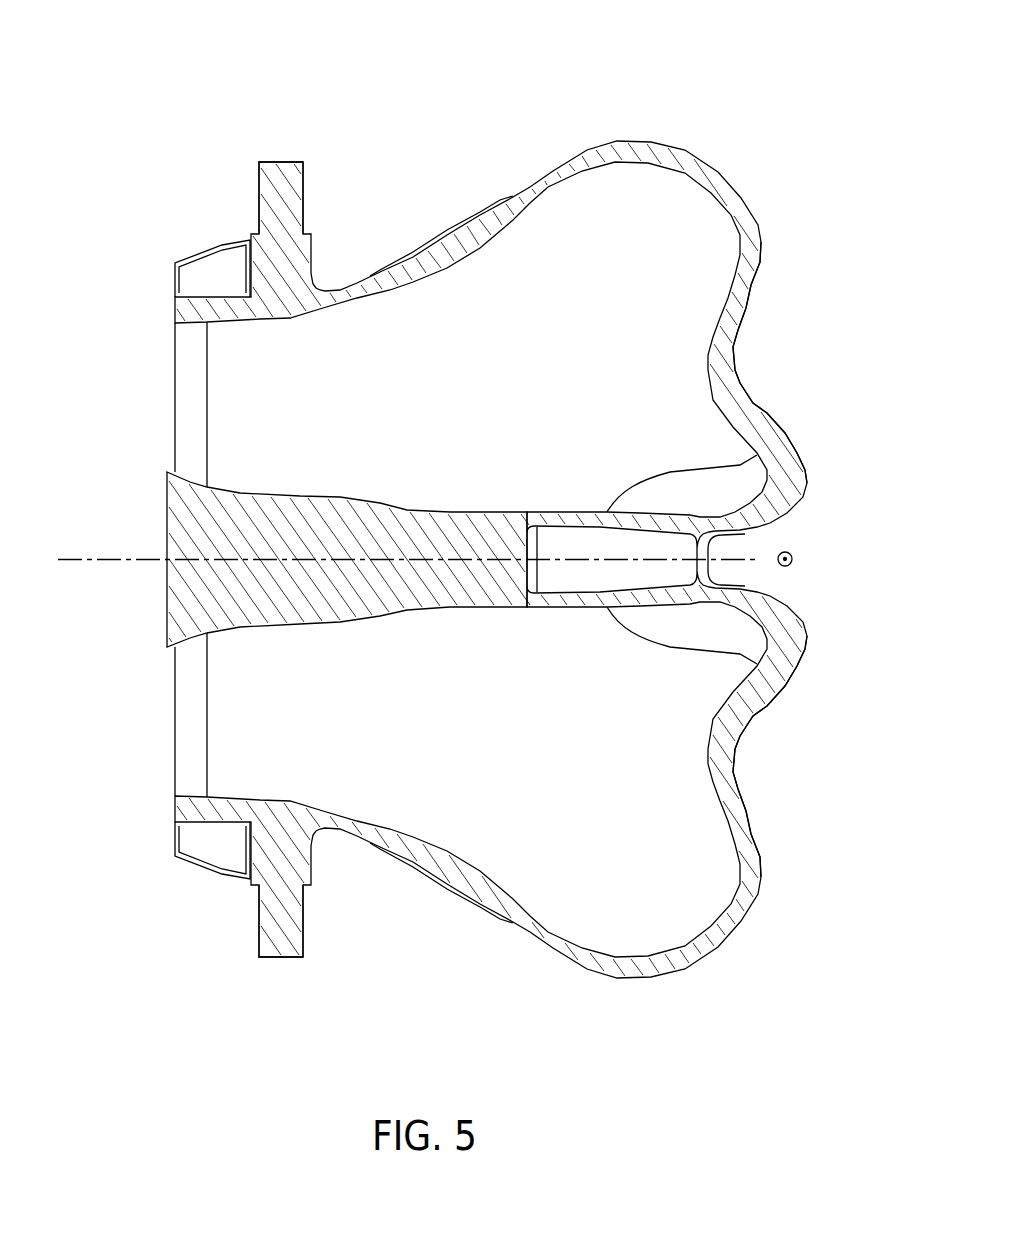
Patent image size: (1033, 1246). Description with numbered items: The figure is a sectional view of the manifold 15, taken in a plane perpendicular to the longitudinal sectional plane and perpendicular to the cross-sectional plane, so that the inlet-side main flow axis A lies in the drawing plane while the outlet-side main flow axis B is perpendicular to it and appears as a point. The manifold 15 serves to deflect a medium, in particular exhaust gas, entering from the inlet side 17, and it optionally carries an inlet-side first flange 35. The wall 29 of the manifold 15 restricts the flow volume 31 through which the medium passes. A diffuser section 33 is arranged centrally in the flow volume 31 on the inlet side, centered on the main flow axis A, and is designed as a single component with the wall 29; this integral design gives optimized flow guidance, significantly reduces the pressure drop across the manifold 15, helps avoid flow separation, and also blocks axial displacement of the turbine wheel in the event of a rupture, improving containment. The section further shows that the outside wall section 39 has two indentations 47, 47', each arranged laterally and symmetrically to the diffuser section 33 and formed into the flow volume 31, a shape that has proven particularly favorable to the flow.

The manifold 15 is at (663, 85).
The inlet side 17 is at (163, 725).
The wall 29 is at (436, 890).
The flow volume 31 is at (560, 369).
The diffuser section 33 is at (330, 612).
The first flange 35 is at (275, 950).
The outside wall section 39 is at (763, 873).
The indentation 47 is at (789, 756).
The indentation 47' is at (793, 362).
The main flow axis on the inlet side A is at (105, 558).
The main flow axis on the outlet side B is at (792, 560).